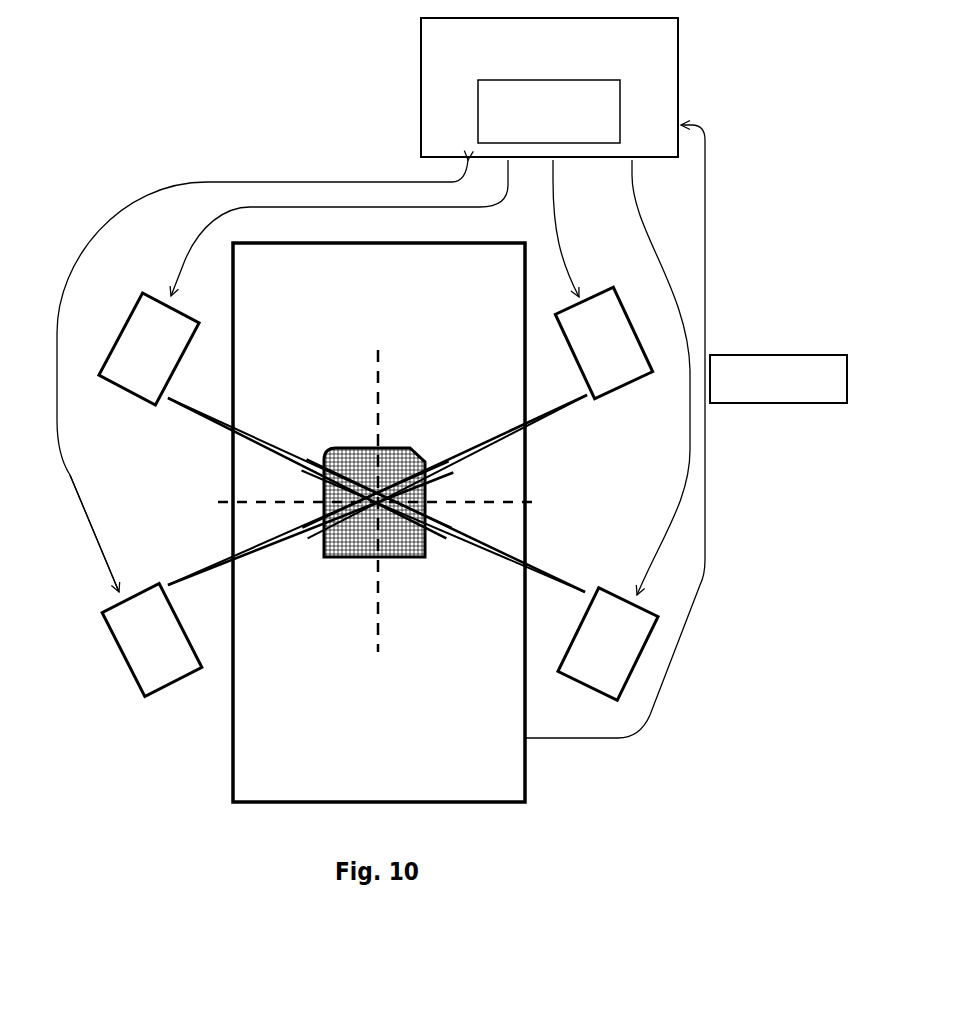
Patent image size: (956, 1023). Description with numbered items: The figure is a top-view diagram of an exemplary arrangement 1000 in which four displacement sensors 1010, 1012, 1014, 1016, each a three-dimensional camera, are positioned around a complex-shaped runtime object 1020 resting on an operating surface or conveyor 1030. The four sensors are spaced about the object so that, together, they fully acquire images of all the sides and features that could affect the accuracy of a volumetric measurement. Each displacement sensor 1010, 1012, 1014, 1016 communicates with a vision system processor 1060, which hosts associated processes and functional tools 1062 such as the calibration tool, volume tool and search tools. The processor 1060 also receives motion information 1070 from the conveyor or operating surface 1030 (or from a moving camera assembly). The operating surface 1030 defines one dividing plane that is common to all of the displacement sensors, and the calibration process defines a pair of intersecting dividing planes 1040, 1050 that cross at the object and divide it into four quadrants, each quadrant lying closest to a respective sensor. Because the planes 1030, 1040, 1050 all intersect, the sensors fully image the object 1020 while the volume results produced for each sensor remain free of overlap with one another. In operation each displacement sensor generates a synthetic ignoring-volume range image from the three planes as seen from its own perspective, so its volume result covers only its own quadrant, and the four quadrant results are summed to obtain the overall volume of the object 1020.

The arrangement 1000 is at (151, 168).
The displacement sensor 1010 is at (123, 390).
The displacement sensor 1012 is at (145, 585).
The displacement sensor 1014 is at (598, 290).
The displacement sensor 1016 is at (598, 587).
The runtime object 1020 is at (397, 467).
The operating surface/conveyor 1030 is at (456, 760).
The dividing plane 1040 is at (380, 360).
The dividing plane 1050 is at (480, 503).
The vision system processor 1060 is at (510, 87).
The functional tools/modules 1062 is at (480, 100).
The motion information 1070 is at (775, 405).